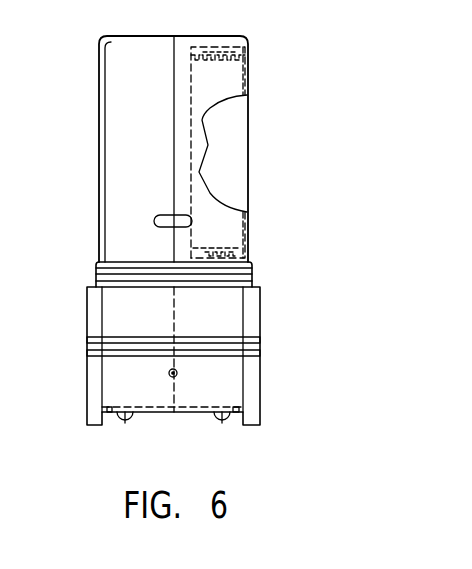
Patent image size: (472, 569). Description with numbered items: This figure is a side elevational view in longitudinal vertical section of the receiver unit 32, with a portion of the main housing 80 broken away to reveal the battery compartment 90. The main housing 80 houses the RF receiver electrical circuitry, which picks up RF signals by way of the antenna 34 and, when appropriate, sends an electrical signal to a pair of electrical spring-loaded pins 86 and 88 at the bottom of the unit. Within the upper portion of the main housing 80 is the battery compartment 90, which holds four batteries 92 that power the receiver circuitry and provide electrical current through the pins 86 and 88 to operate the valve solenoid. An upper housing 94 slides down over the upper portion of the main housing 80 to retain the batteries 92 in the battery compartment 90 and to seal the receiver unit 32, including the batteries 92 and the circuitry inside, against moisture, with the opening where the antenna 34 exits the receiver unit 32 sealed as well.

The receiver unit 32 is at (173, 149).
The antennae 34 is at (177, 375).
The main housing 80 is at (97, 218).
The electrical spring-loaded pin 86 is at (222, 423).
The electrical spring-loaded pin 88 is at (125, 423).
The battery compartment 90 is at (256, 121).
The batteries 92 is at (232, 172).
The upper housing 94 is at (252, 270).